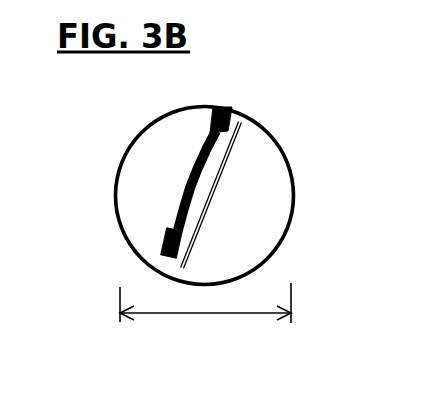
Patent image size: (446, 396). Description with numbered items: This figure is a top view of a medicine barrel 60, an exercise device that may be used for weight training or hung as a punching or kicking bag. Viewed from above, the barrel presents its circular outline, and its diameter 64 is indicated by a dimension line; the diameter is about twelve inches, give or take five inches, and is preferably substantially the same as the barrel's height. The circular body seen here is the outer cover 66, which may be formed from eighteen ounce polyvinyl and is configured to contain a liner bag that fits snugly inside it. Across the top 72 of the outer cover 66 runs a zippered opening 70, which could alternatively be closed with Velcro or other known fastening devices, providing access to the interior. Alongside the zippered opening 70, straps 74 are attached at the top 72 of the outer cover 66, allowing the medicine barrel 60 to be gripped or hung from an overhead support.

The medicine barrel 60 is at (140, 132).
The diameter 64 is at (250, 314).
The outer cover 66 is at (150, 243).
The zippered opening 70 is at (230, 155).
The top 72 is at (130, 212).
The straps 74 is at (189, 193).